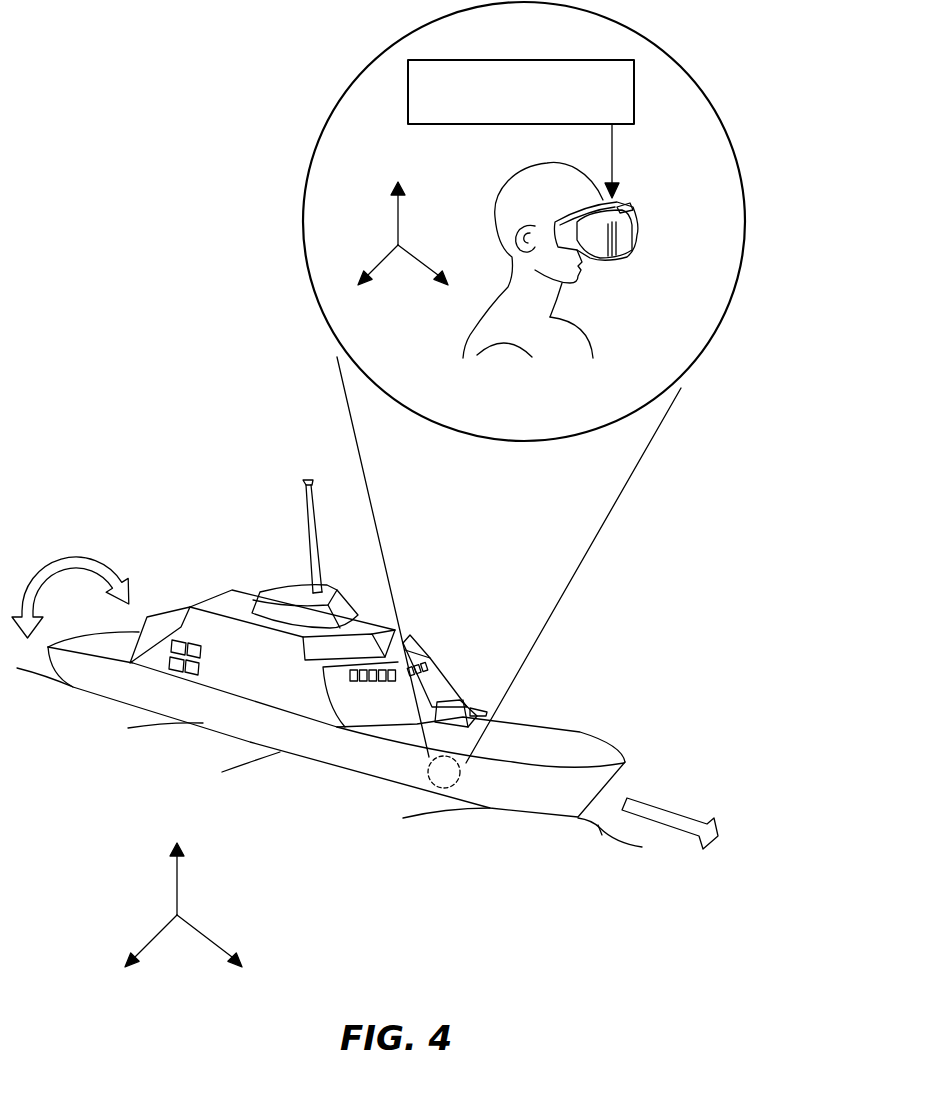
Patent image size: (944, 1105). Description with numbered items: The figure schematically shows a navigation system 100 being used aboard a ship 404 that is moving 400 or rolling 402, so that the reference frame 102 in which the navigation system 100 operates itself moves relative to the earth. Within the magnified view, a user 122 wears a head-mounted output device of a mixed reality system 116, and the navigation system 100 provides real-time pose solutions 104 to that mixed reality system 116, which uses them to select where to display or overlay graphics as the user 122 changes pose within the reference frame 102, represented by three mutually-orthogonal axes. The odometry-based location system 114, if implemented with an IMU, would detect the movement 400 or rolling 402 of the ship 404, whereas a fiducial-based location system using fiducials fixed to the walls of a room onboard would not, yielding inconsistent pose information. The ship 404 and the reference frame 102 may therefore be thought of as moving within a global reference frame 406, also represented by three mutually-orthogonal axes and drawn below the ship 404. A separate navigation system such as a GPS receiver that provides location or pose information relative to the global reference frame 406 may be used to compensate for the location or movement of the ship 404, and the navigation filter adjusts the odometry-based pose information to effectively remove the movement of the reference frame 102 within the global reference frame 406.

The navigation system 100 is at (503, 117).
The reference frame 102 is at (397, 230).
The real-time pose solutions 104 is at (613, 145).
The odometry-based location system 114 is at (627, 205).
The mixed reality system 116 is at (638, 233).
The user 122 is at (496, 199).
The movement 400 is at (652, 823).
The rolling 402 is at (68, 557).
The ship 404 is at (595, 735).
The global reference frame 406 is at (172, 895).